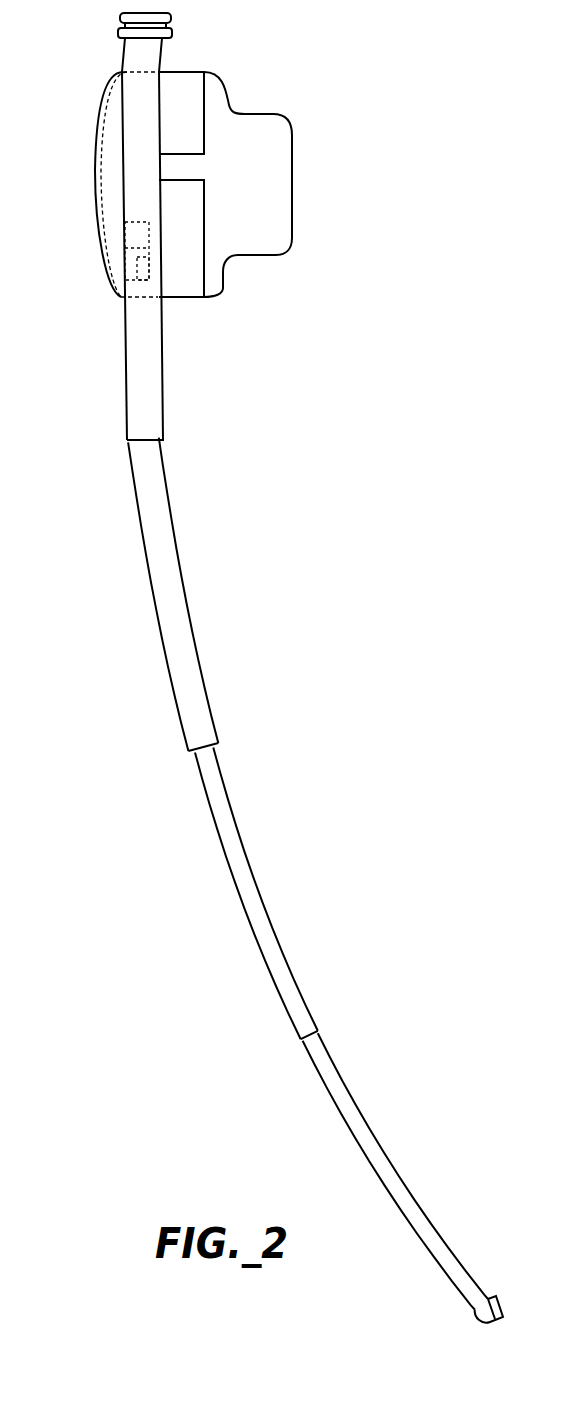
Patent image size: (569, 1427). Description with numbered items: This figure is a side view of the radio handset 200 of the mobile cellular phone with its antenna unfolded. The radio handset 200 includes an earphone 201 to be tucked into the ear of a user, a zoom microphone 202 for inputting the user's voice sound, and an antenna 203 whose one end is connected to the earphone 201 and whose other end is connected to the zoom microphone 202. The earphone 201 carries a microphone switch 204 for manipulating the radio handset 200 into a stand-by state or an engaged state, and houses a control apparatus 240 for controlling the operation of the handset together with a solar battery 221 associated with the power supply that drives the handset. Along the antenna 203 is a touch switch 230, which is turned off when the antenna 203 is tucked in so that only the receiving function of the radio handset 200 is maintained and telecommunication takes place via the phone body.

The radio handset 200 is at (97, 143).
The earphone 201 is at (293, 162).
The zoom microphone 202 is at (502, 1308).
The antenna 203 is at (268, 940).
The microphone switch 204 is at (137, 281).
The solar battery 221 is at (178, 278).
The touch switch 230 is at (203, 757).
The control apparatus 240 is at (178, 82).